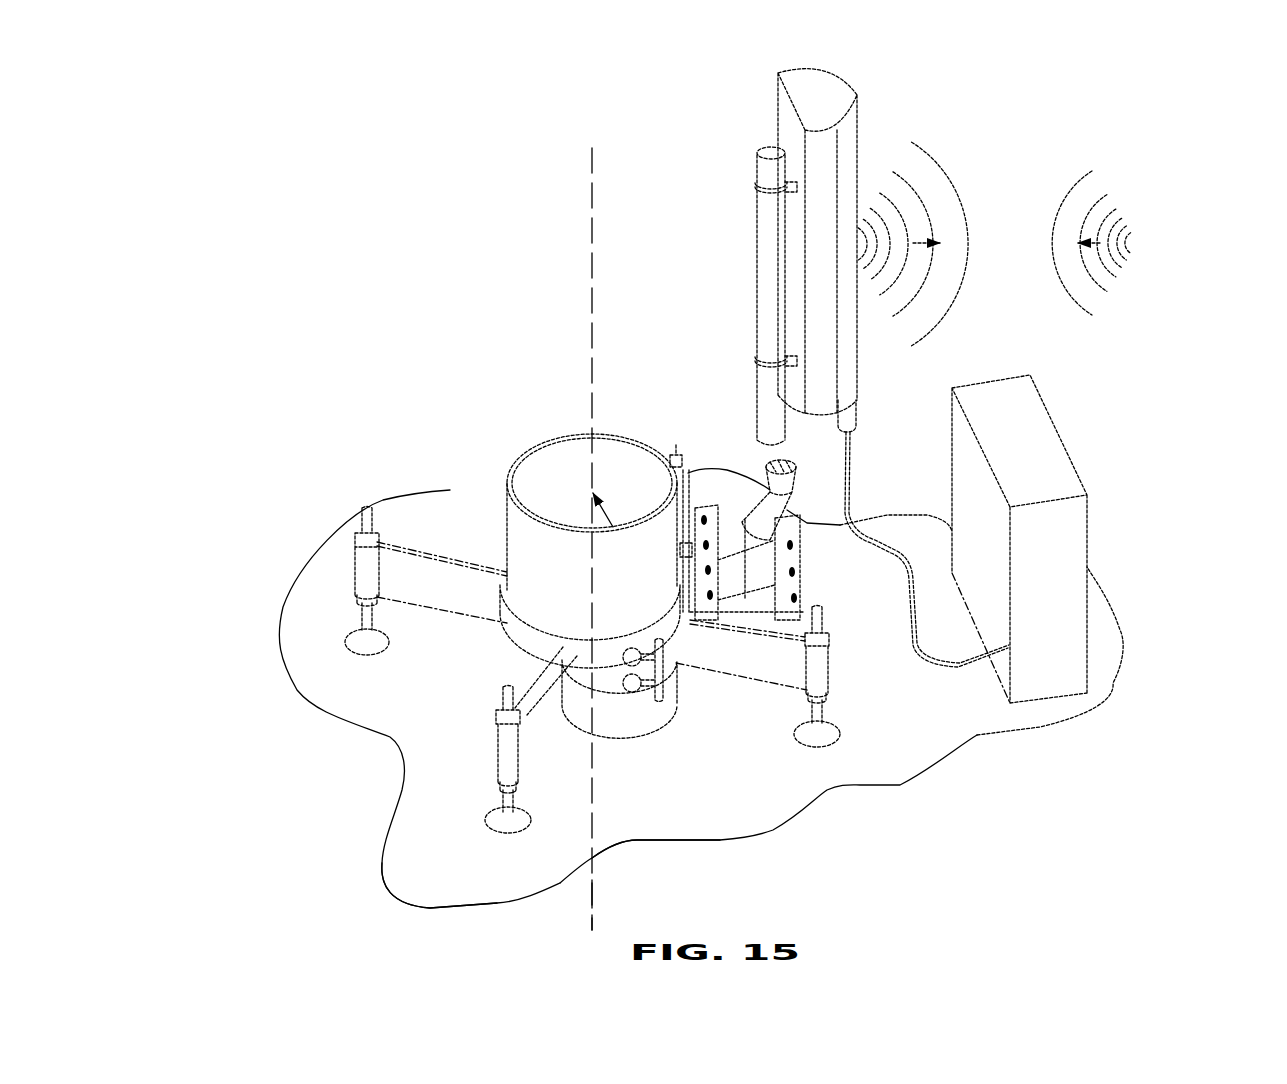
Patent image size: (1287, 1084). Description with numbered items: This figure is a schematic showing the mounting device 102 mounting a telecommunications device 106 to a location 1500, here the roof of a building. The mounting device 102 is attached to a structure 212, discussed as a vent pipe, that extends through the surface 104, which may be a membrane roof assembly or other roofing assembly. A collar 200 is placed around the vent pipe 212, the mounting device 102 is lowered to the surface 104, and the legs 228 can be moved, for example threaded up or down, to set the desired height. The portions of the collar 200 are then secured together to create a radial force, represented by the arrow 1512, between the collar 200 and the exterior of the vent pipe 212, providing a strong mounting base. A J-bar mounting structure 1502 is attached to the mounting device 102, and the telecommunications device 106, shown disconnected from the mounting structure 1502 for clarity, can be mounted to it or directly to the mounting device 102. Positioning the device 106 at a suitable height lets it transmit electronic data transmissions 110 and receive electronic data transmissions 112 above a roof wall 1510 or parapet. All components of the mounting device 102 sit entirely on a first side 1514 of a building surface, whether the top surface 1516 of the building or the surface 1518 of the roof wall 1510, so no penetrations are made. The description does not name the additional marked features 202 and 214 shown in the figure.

The mounting device 102 is at (367, 473).
The surface 104 is at (418, 877).
The telecommunications device 106 is at (775, 115).
The electronic data transmissions 110 is at (940, 137).
The electronic data transmissions 112 is at (1082, 155).
The collar 200 is at (498, 647).
The vertical axis 202 is at (592, 253).
The vent pipe 212 is at (588, 485).
The lower end of axis 214 is at (592, 917).
The legs 228 is at (362, 615).
The location 1500 is at (903, 832).
The mounting structure 1502 is at (793, 550).
The roof wall 1510 is at (1088, 525).
The arrow representing radial force 1512 is at (557, 463).
The first side 1514 is at (916, 415).
The top surface 1516 is at (638, 803).
The surface of the roof wall 1518 is at (973, 505).